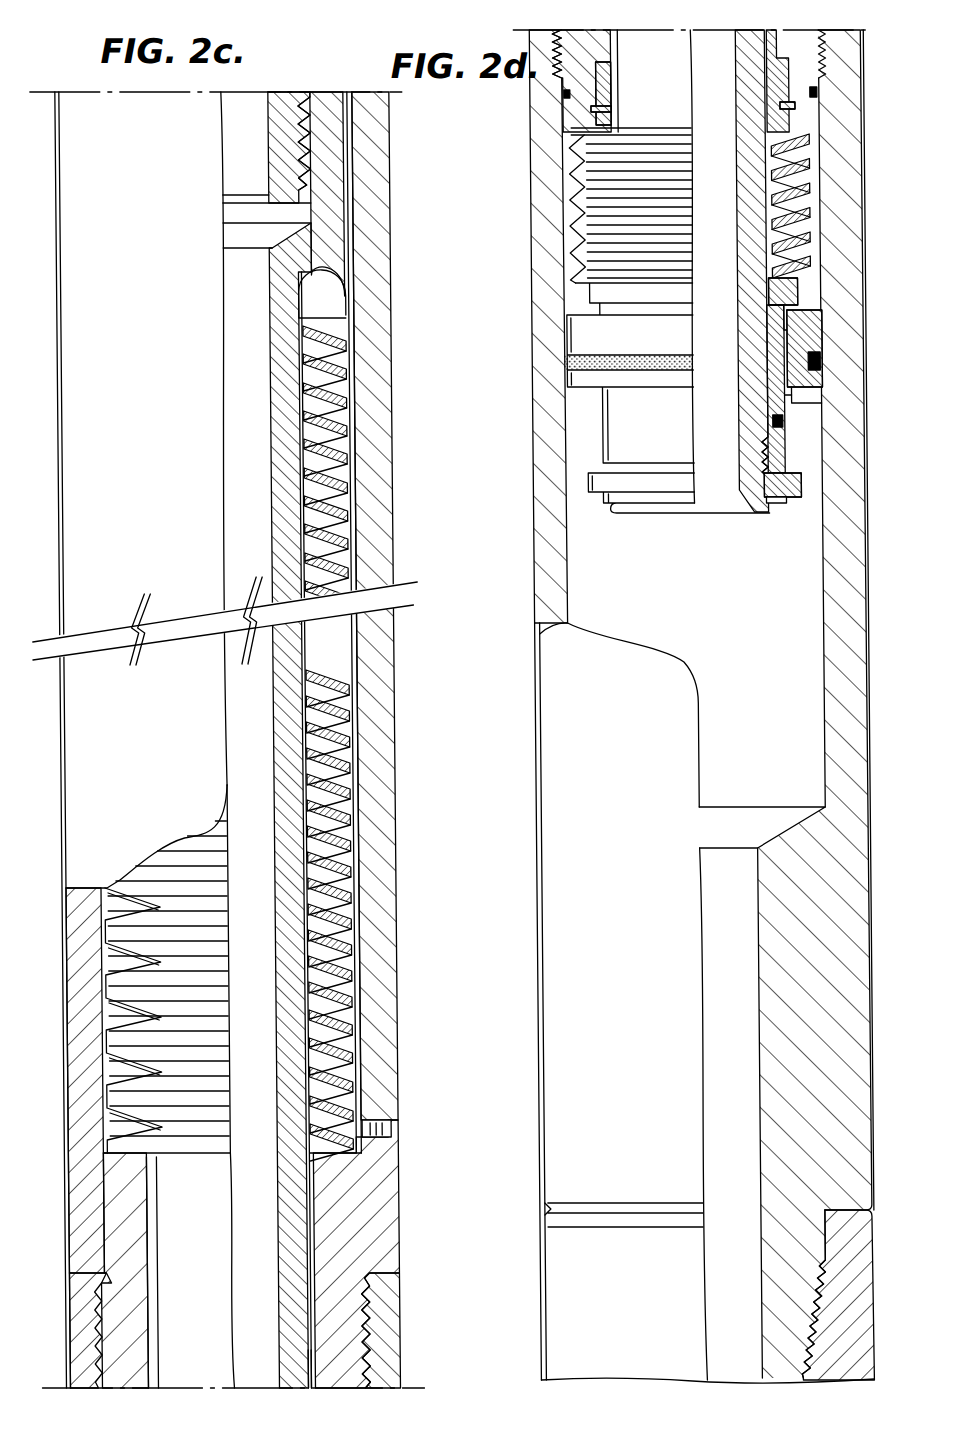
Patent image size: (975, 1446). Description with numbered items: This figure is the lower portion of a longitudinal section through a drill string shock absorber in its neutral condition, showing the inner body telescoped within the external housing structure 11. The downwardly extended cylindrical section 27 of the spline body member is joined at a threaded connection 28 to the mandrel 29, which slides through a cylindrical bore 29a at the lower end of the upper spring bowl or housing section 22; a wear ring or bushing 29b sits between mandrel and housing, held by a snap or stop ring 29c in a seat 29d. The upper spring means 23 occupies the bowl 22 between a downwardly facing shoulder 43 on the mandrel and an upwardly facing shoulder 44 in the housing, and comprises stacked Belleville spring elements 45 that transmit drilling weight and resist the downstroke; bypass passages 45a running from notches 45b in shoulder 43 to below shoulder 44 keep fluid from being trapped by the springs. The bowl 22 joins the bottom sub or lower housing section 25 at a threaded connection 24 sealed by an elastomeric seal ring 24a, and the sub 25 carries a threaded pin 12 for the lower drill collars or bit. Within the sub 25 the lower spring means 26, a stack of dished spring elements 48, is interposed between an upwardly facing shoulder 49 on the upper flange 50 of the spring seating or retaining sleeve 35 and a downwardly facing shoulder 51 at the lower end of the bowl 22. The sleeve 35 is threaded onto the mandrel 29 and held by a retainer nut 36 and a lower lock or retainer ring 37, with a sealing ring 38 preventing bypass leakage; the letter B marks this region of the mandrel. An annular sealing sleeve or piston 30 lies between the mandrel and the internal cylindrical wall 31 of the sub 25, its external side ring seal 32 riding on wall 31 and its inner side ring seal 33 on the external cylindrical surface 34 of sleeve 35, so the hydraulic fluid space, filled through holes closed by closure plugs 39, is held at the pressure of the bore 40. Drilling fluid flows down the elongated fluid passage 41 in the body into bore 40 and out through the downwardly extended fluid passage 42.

In FIG. 2C, the external housing structure 11 is at (388, 448).
In FIG. 2D, the threaded pin 12 is at (794, 1330).
In FIG. 2C, the upper spring bowl or housing section 22 is at (378, 193).
In FIG. 2C, the upper spring means 23 is at (345, 556).
In FIG. 2C, the threaded connection 24 is at (354, 1327).
In FIG. 2D, the threaded connection 24 is at (556, 42).
In FIG. 2D, the elastomeric seal ring 24a is at (817, 92).
In FIG. 2D, the bottom sub or lower housing section 25 is at (843, 593).
In FIG. 2D, the lower spring means 26 is at (583, 228).
In FIG. 2C, the downwardly extended cylindrical section 27 is at (285, 97).
In FIG. 2C, the threaded connection 28 is at (307, 144).
In FIG. 2C, the mandrel or lower body section 29 is at (279, 457).
In FIG. 2D, the mandrel or lower body section 29 is at (748, 433).
In FIG. 2C, the cylindrical bore 29a is at (298, 1375).
In FIG. 2D, the cylindrical bore 29a is at (826, 41).
In FIG. 2D, the wear ring or bushing 29b is at (606, 82).
In FIG. 2D, the snap or stop ring 29c is at (796, 106).
In FIG. 2D, the seat 29d is at (588, 109).
In FIG. 2D, the annular sealing sleeve or piston 30 is at (812, 325).
In FIG. 2D, the internal cylindrical wall 31 is at (819, 399).
In FIG. 2D, the external side ring seal 32 is at (819, 361).
In FIG. 2D, the inner side ring seal 33 is at (784, 333).
In FIG. 2D, the external cylindrical surface 34 is at (786, 397).
In FIG. 2D, the spring seating or retaining sleeve 35 is at (782, 446).
In FIG. 2D, the retainer nut 36 is at (798, 483).
In FIG. 2D, the lower lock or retainer ring 37 is at (778, 503).
In FIG. 2D, the sealing ring 38 is at (781, 423).
In FIG. 2C, the closure plugs 39 is at (382, 1131).
In FIG. 2D, the bore 40 is at (782, 729).
In FIG. 2C, the elongated fluid passage 41 is at (254, 811).
In FIG. 2D, the downwardly extended fluid passage 42 is at (726, 1052).
In FIG. 2C, the downwardly facing shoulder 43 is at (345, 338).
In FIG. 2C, the upwardly facing shoulder 44 is at (312, 1154).
In FIG. 2C, the spring elements 45 is at (340, 807).
In FIG. 2C, the bypass passages 45a is at (297, 936).
In FIG. 2C, the notches 45b is at (329, 298).
In FIG. 2D, the spring elements 48 is at (808, 216).
In FIG. 2D, the upwardly facing shoulder 49 is at (800, 263).
In FIG. 2D, the upper flange 50 is at (796, 293).
In FIG. 2D, the downwardly facing shoulder 51 is at (790, 136).
In FIG. 2D, the lower end B is at (863, 1370).